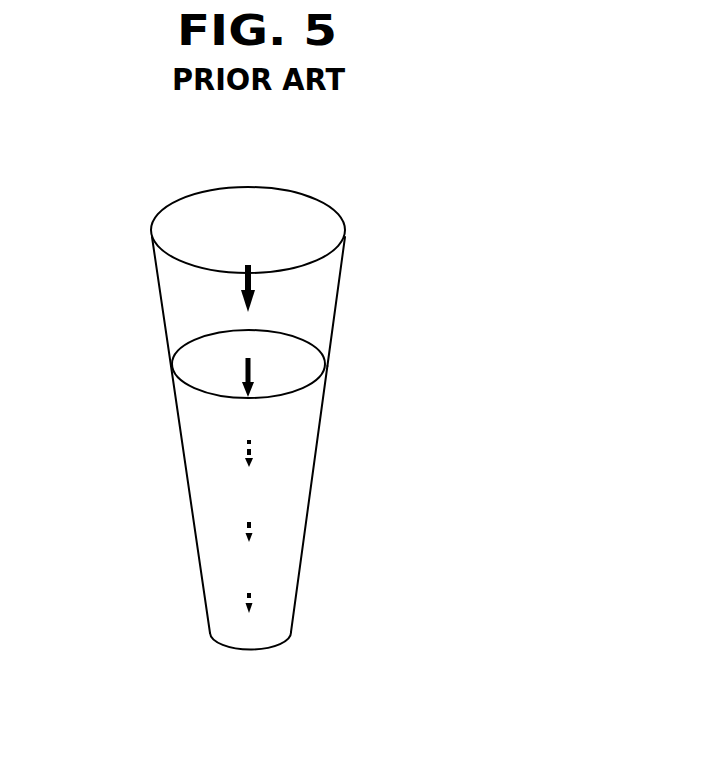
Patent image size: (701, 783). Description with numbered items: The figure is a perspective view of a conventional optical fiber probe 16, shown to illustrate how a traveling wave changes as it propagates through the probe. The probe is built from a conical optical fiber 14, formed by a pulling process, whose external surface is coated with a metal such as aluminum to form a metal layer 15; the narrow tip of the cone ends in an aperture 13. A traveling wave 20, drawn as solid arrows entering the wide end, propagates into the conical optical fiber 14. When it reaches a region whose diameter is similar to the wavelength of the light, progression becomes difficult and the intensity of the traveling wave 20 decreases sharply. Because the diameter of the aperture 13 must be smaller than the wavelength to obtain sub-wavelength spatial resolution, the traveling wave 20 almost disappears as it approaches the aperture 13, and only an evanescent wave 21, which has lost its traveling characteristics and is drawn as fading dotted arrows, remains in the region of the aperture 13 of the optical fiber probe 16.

The aperture 13 is at (265, 650).
The conical optical fiber 14 is at (322, 315).
The metal layer 15 is at (310, 425).
The optical fiber probe 16 is at (340, 188).
The traveling wave 20 is at (243, 300).
The evanescent wave 21 is at (248, 600).